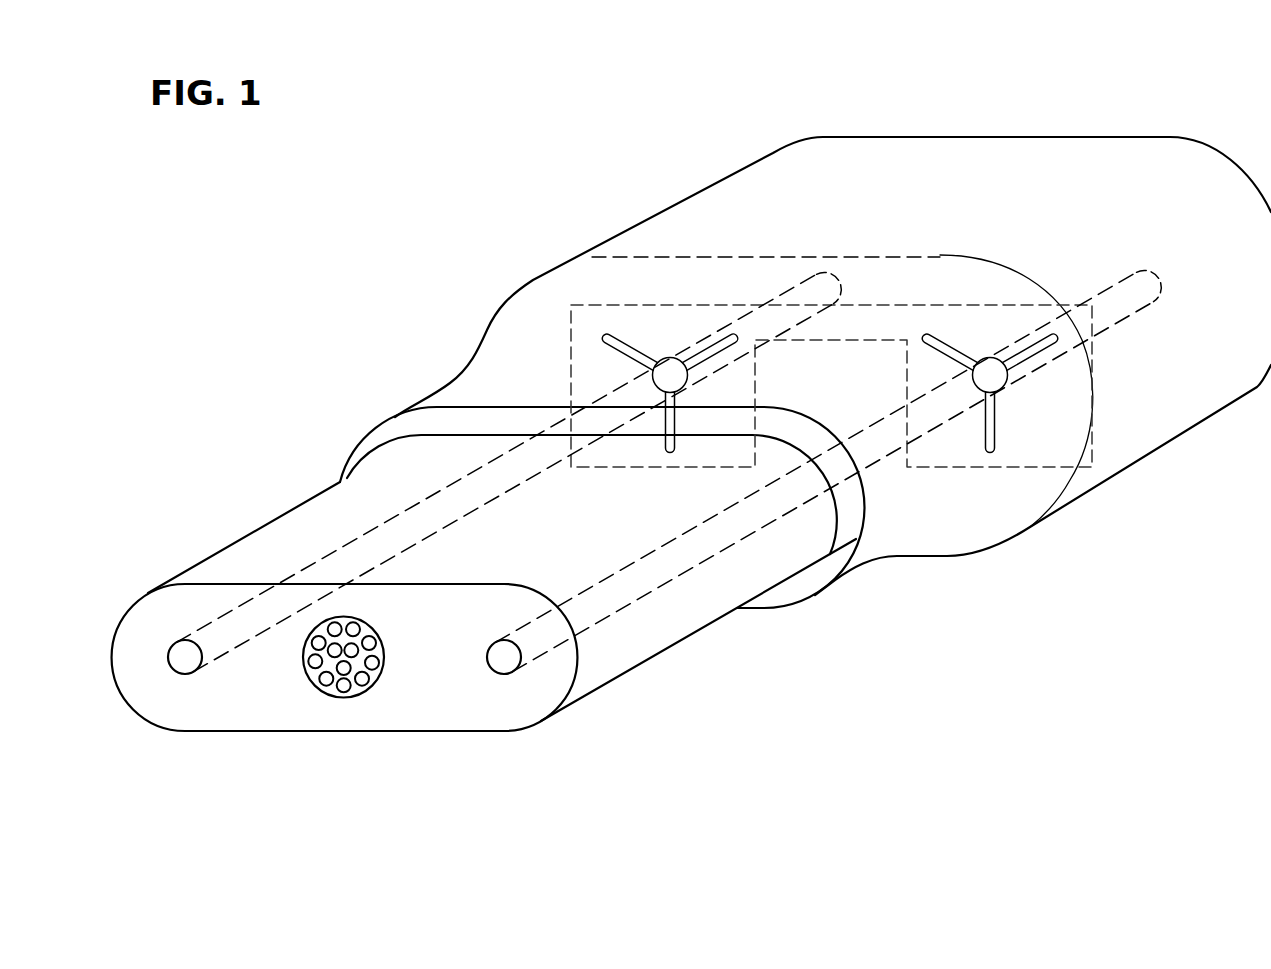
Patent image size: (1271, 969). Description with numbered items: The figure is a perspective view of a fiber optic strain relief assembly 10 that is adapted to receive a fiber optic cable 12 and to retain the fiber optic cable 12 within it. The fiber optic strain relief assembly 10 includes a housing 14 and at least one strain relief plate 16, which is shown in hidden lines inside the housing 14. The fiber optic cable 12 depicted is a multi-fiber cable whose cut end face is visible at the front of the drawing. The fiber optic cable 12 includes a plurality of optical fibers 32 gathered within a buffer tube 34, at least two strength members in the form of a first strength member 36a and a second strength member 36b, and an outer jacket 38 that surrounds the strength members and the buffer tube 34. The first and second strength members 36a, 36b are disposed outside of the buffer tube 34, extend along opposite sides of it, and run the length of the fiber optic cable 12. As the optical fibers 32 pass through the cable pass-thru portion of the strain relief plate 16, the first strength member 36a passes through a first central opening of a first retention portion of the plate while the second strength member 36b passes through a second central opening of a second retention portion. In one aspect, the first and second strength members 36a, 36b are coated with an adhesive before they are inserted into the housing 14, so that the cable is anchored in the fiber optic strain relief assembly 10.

The fiber optic strain relief assembly 10 is at (540, 219).
The fiber optic cable 12 is at (677, 661).
The housing 14 is at (1150, 453).
The strain relief plate 16 is at (1093, 375).
The optical fibers 32 is at (376, 640).
The buffer tube 34 is at (383, 678).
The first strength member 36a is at (185, 667).
The second strength member 36b is at (500, 668).
The outer jacket 38 is at (302, 732).